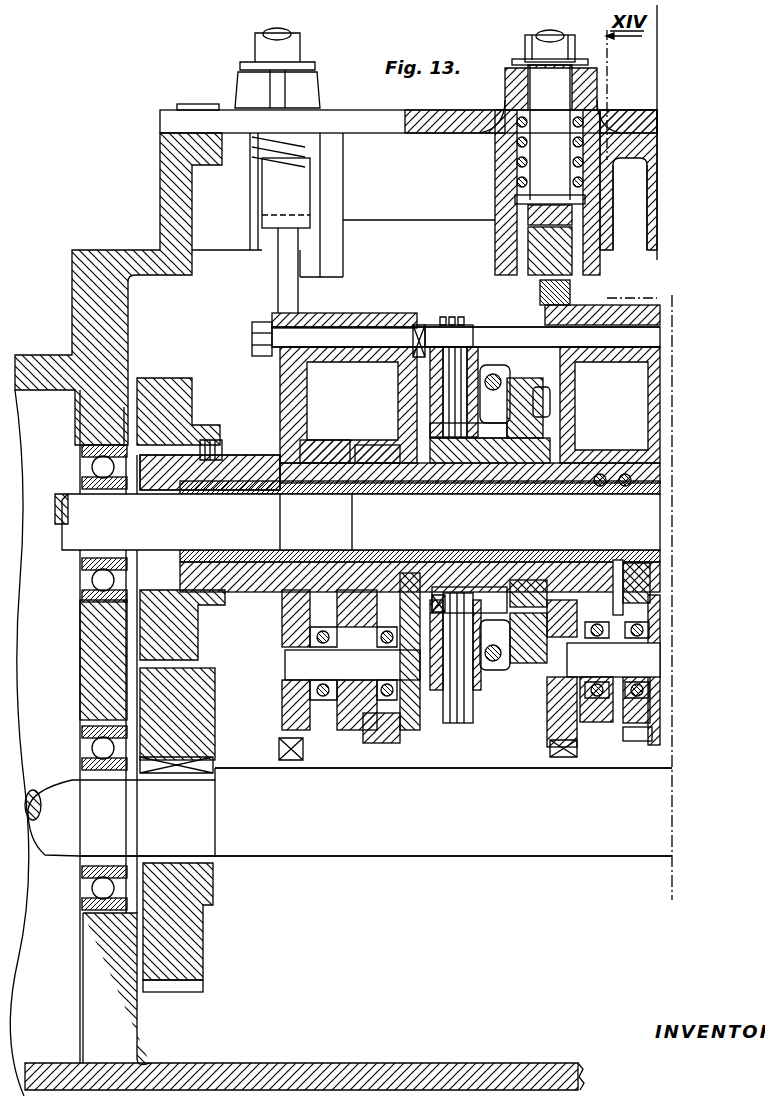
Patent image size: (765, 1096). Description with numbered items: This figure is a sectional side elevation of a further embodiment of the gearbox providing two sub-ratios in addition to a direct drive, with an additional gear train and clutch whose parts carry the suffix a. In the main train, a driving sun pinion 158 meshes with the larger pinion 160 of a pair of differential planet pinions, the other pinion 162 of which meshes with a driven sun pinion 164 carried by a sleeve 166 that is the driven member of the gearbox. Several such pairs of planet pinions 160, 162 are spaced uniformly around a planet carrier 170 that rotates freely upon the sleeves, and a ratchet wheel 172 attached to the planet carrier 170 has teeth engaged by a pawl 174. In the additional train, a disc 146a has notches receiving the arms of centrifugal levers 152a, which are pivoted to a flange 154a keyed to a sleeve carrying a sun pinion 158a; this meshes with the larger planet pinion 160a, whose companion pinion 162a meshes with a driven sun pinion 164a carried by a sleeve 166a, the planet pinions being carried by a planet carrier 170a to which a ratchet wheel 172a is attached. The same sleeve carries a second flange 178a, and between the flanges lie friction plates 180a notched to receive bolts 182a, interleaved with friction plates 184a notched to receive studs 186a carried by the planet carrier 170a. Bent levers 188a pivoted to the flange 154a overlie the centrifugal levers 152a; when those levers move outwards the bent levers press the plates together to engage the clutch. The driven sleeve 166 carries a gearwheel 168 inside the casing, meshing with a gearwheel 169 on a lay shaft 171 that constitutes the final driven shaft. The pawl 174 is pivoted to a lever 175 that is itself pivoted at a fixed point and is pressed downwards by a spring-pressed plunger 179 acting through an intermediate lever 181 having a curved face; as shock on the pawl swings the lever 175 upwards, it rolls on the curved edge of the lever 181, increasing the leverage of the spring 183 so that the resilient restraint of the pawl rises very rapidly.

The spring-pressed plunger 179 is at (283, 145).
The intermediate lever 181 is at (282, 186).
The pawl 174 is at (293, 247).
The lever 175 is at (540, 238).
The spring 183 is at (580, 137).
The ratchet wheel 172a is at (272, 302).
The gearwheel 168 is at (160, 407).
The planet carrier 170a is at (337, 318).
The planet carrier 170 is at (620, 320).
The second flange 178a is at (448, 383).
The studs 186a is at (437, 332).
The friction plates 184a is at (470, 318).
The bent levers 188a is at (482, 353).
The flange 154a is at (493, 378).
The centrifugal levers 152a is at (552, 390).
The sleeve 166a is at (242, 470).
The driven sun pinion 164a is at (317, 450).
The sun pinion 158a is at (377, 450).
The sleeve 166 is at (390, 548).
The friction plates 180a is at (447, 440).
The bolts 182a is at (477, 445).
The disc 146a is at (533, 587).
The driven sun pinion 164 is at (598, 458).
The sun pinion 158 is at (618, 485).
The ratchet wheel 172 is at (628, 555).
The gearwheel 169 is at (167, 702).
The planet pinion 162a is at (333, 712).
The planet pinion 160a is at (383, 722).
The planet pinion 160 is at (637, 740).
The planet pinion 162 is at (598, 718).
The lay shaft 171 is at (482, 837).